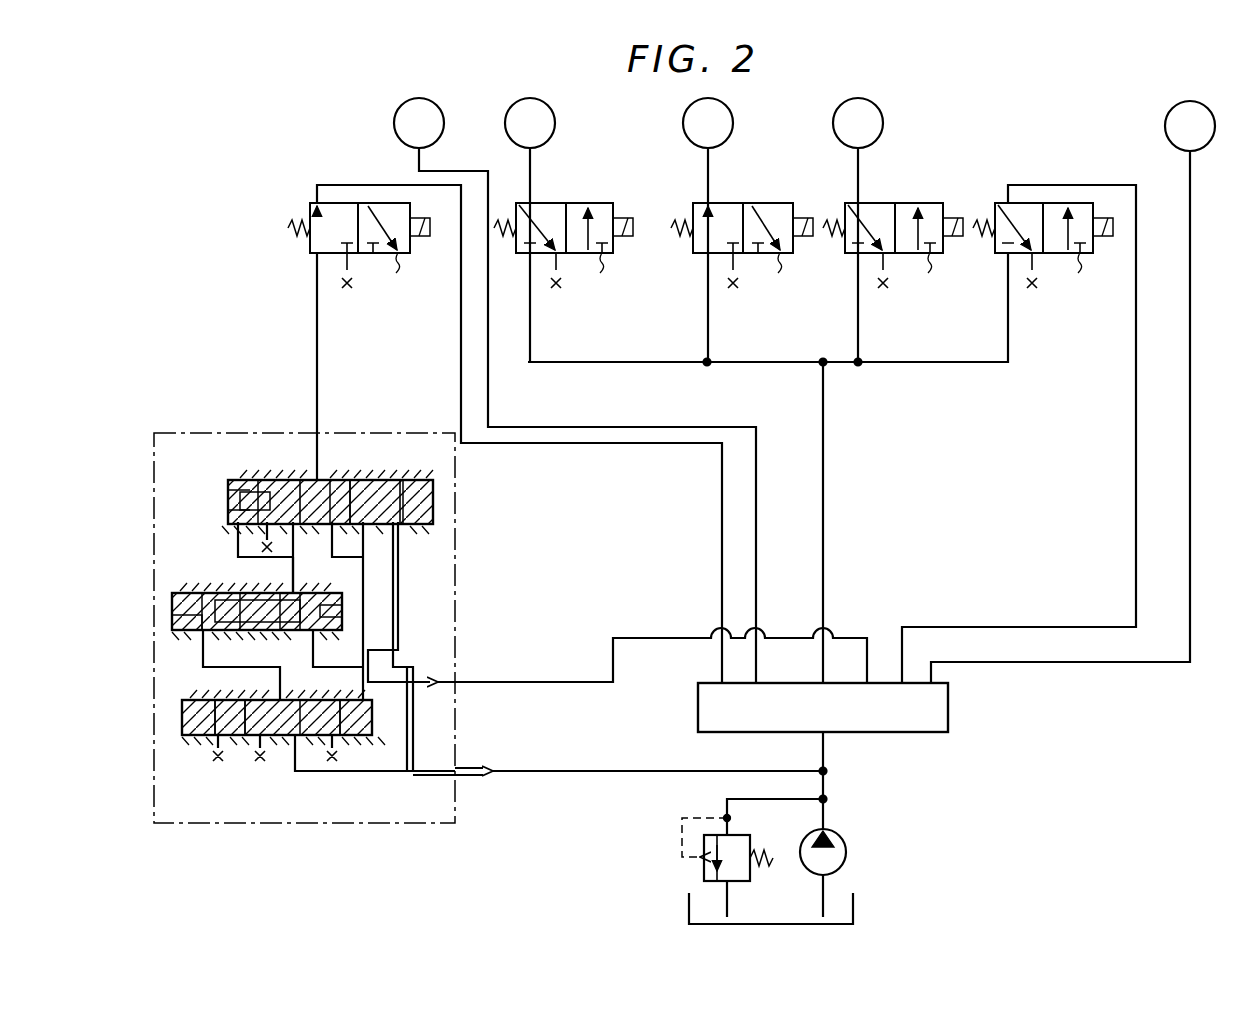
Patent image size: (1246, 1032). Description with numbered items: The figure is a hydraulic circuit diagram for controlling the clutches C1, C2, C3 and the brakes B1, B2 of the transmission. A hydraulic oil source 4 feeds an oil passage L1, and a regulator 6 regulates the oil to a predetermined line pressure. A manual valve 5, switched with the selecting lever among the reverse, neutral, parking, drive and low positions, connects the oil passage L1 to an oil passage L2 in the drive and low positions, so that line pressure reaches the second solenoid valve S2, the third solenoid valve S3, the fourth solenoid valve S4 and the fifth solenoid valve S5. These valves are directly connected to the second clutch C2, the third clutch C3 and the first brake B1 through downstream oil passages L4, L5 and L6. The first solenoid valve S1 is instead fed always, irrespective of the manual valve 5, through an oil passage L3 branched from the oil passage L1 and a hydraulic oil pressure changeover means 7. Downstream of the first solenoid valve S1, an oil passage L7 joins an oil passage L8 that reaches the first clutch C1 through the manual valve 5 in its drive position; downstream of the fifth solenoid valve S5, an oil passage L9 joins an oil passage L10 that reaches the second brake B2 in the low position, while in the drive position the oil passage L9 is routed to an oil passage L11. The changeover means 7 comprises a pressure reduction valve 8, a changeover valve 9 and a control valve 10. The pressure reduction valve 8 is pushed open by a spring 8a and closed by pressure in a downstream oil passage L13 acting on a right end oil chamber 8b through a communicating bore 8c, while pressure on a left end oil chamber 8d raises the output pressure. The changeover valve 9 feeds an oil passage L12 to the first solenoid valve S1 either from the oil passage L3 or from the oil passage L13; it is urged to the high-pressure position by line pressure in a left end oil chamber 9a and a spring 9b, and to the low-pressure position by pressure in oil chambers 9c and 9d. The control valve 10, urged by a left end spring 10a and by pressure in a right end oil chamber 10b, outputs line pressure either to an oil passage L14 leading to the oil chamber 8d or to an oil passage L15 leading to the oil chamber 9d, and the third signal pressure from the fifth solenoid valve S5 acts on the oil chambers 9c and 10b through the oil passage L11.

The hydraulic oil source 4 is at (848, 853).
The manual valve 5 is at (950, 708).
The regulator 6 is at (704, 866).
The hydraulic oil pressure changeover means 7 is at (192, 826).
The pressure reduction valve 8 is at (257, 620).
The spring 8a is at (232, 592).
The right end oil chamber 8b is at (345, 612).
The communicating bore 8c is at (343, 606).
The oil chamber 8d is at (198, 630).
The changeover valve 9 is at (345, 480).
The left end oil chamber 9a is at (232, 480).
The spring 9b is at (228, 500).
The oil chamber 9c is at (342, 482).
The oil chamber 9d is at (403, 488).
The control valve 10 is at (290, 740).
The left end spring 10a is at (246, 745).
The right end oil chamber 10b is at (360, 740).
The oil passage L1 is at (826, 787).
The oil passage L2 is at (825, 535).
The oil passage L3 is at (612, 768).
The oil passage L4 is at (532, 173).
The oil passage L5 is at (710, 175).
The oil passage L6 is at (860, 175).
The oil passage L7 is at (461, 342).
The oil passage L8 is at (758, 532).
The oil passage L9 is at (1136, 530).
The oil passage L10 is at (1190, 472).
The oil passage L11 is at (656, 637).
The oil passage L12 is at (317, 342).
The oil passage L13 is at (292, 572).
The oil passage L14 is at (250, 668).
The oil passage L15 is at (398, 593).
The first solenoid valve S1 is at (359, 256).
The second solenoid valve S2 is at (563, 256).
The third solenoid valve S3 is at (742, 256).
The fourth solenoid valve S4 is at (893, 256).
The fifth solenoid valve S5 is at (1043, 256).
The first clutch C1 is at (419, 123).
The second clutch C2 is at (530, 123).
The third clutch C3 is at (708, 123).
The first brake B1 is at (858, 123).
The second brake B2 is at (1190, 126).